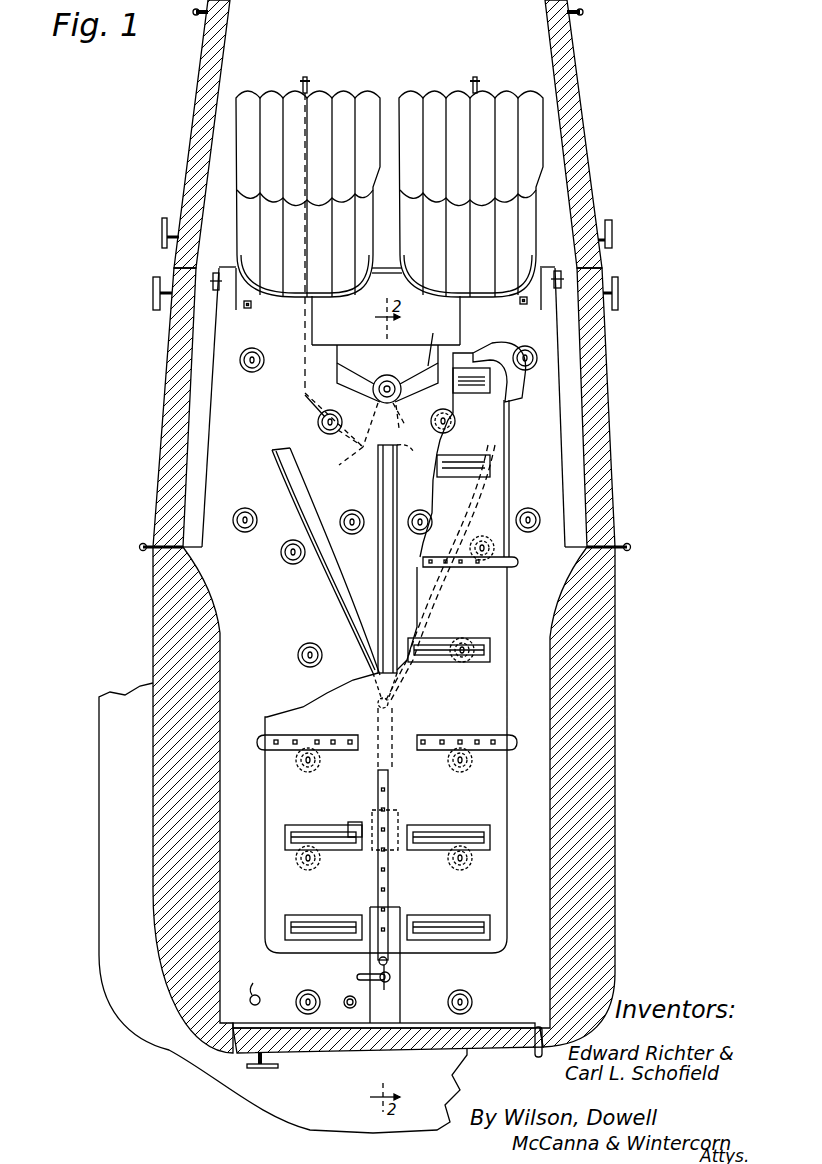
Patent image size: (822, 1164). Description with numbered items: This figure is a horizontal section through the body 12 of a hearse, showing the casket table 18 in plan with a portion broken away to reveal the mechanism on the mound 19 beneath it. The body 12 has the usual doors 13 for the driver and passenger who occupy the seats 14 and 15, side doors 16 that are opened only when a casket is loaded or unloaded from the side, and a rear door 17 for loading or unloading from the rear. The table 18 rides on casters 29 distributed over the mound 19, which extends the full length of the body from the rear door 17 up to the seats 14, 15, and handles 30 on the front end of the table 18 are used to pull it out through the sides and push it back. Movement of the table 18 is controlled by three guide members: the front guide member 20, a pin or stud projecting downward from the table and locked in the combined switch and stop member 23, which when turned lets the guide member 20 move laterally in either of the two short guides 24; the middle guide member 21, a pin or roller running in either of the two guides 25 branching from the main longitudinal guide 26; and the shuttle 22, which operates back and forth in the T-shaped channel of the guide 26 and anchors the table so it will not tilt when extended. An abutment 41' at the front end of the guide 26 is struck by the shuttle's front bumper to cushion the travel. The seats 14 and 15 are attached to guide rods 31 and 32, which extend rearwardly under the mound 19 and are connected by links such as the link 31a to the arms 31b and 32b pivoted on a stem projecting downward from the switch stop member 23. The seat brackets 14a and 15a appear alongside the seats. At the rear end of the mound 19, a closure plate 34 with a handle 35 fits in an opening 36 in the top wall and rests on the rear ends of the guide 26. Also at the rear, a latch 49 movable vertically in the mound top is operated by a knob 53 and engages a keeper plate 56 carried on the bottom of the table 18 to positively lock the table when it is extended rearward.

The body 12 is at (612, 740).
The doors 13 is at (583, 93).
The seat 14 is at (343, 98).
The seat 15 is at (487, 102).
The seat bracket 14a is at (217, 272).
The seat bracket 15a is at (558, 271).
The side doors 16 is at (612, 372).
The rear door 17 is at (313, 1048).
The table 18 is at (497, 703).
The mound 19 is at (216, 441).
The front guide member 20 is at (392, 383).
The middle guide member 21 is at (377, 722).
The shuttle 22 is at (397, 823).
The switch and stop member 23 is at (381, 380).
The short guides 24 is at (436, 341).
The guides 25 is at (324, 598).
The longitudinal guide 26 is at (378, 580).
The casters 29 is at (287, 561).
The handles 30 is at (497, 343).
The guide rod 31 is at (312, 78).
The guide rod 32 is at (477, 78).
The link 31a is at (346, 466).
The arm 31b is at (365, 421).
The arm 32b is at (404, 411).
The abutment 41' is at (410, 459).
The closure plate 34 is at (393, 990).
The handle 35 is at (357, 977).
The opening 36 is at (402, 1007).
The latch 49 is at (350, 1008).
The knob 53 is at (248, 983).
The keeper plate 56 is at (352, 840).